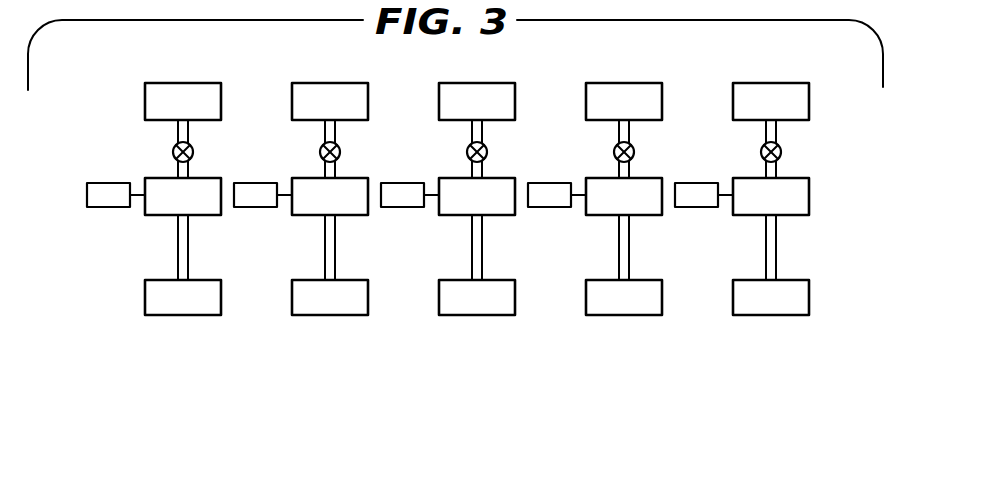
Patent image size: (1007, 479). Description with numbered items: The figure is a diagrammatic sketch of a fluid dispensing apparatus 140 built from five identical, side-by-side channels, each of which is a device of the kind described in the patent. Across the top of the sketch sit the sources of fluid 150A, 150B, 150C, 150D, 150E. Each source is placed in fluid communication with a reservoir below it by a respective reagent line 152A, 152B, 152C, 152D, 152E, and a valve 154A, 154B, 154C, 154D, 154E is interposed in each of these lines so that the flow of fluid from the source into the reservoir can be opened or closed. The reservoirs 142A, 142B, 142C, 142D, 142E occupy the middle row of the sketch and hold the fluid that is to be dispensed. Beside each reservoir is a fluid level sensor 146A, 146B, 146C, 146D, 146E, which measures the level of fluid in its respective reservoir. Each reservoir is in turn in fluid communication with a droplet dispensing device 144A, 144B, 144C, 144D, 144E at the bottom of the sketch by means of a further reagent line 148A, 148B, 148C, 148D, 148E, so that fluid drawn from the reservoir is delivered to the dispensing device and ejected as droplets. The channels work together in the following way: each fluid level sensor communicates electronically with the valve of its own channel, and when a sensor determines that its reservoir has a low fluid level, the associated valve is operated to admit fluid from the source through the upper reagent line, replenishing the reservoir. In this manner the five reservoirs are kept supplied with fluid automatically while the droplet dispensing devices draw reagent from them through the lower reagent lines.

The fluid dispensing apparatus 140 is at (762, 363).
The source of fluid 150A is at (213, 115).
The source of fluid 150B is at (360, 115).
The source of fluid 150C is at (507, 115).
The source of fluid 150D is at (654, 115).
The source of fluid 150E is at (801, 115).
The reagent line 152A is at (188, 125).
The reagent line 152B is at (335, 125).
The reagent line 152C is at (482, 125).
The reagent line 152D is at (629, 125).
The reagent line 152E is at (776, 125).
The valve 154A is at (172, 148).
The valve 154B is at (320, 151).
The valve 154C is at (467, 150).
The valve 154D is at (614, 150).
The valve 154E is at (761, 150).
The reservoir 142A is at (213, 210).
The reservoir 142B is at (360, 210).
The reservoir 142C is at (507, 210).
The reservoir 142D is at (654, 210).
The reservoir 142E is at (801, 210).
The fluid level sensor 146A is at (105, 207).
The fluid level sensor 146B is at (264, 207).
The fluid level sensor 146C is at (411, 207).
The fluid level sensor 146D is at (558, 207).
The fluid level sensor 146E is at (703, 207).
The reagent line 148A is at (178, 247).
The reagent line 148B is at (325, 247).
The reagent line 148C is at (472, 247).
The reagent line 148D is at (619, 247).
The reagent line 148E is at (766, 247).
The droplet dispensing device 144A is at (213, 310).
The droplet dispensing device 144B is at (360, 310).
The droplet dispensing device 144C is at (507, 310).
The droplet dispensing device 144D is at (654, 310).
The droplet dispensing device 144E is at (801, 310).